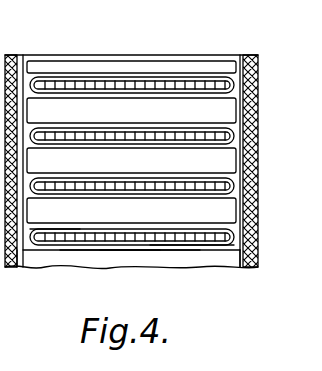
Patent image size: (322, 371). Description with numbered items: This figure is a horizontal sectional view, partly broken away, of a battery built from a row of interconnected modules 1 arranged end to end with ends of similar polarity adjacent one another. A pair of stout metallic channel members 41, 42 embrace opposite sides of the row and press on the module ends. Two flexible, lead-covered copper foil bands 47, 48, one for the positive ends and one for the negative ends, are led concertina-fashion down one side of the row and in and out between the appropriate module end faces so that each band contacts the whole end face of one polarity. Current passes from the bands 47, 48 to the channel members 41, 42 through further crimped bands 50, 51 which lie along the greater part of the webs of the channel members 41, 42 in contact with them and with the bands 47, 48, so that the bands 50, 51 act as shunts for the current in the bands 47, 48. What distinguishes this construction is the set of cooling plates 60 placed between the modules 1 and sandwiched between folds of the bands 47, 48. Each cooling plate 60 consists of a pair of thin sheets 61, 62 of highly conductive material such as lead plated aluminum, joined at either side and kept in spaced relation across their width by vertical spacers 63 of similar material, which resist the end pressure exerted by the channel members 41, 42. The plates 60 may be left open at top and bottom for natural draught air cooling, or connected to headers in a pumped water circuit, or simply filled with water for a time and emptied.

The module 1 is at (218, 113).
The channel member 41 is at (10, 268).
The channel member 42 is at (257, 176).
The band 47 is at (108, 250).
The band 48 is at (208, 90).
The band 50 is at (22, 262).
The band 51 is at (240, 268).
The cooling plate 60 is at (157, 76).
The thin sheet 61 is at (150, 246).
The thin sheet 62 is at (196, 246).
The vertical spacer 63 is at (148, 250).